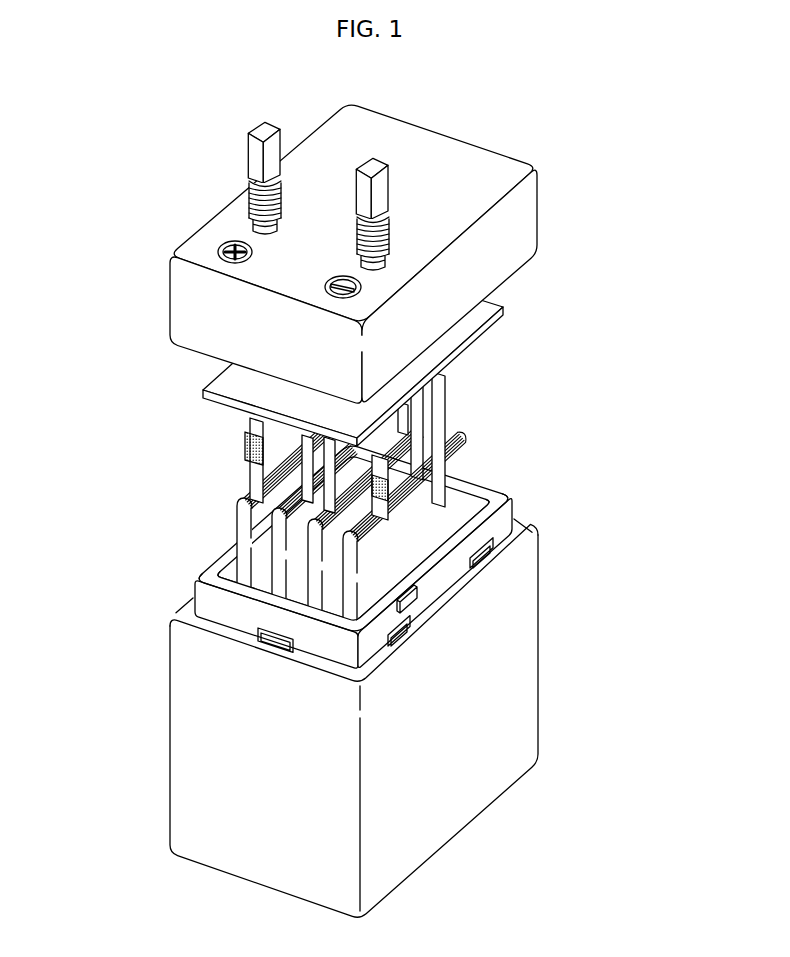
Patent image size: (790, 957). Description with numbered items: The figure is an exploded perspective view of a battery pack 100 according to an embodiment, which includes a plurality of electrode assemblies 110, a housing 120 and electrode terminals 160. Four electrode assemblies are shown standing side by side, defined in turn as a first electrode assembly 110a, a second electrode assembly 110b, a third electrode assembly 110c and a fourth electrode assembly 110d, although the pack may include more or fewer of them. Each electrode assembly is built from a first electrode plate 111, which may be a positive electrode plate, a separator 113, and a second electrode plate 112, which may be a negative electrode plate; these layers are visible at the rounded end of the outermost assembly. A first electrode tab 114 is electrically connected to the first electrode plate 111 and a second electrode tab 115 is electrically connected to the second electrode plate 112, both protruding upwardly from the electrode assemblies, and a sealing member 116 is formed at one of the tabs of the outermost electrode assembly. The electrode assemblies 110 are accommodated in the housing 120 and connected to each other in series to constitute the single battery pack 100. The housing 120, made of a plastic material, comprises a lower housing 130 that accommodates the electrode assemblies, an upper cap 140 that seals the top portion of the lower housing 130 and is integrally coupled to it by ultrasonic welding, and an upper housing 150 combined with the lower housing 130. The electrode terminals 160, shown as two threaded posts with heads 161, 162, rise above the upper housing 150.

The battery pack 100 is at (95, 83).
The electrode assemblies 110 is at (108, 572).
The first electrode assembly 110a is at (322, 521).
The second electrode assembly 110b is at (310, 563).
The third electrode assembly 110c is at (274, 542).
The fourth electrode assembly 110d is at (237, 528).
The first electrode plate 111 is at (474, 436).
The second electrode plate 112 is at (458, 434).
The separator 113 is at (467, 434).
The first electrode tab 114 is at (441, 444).
The second electrode tab 115 is at (383, 508).
The sealing member 116 is at (367, 523).
The housing 120 is at (628, 305).
The lower housing 130 is at (343, 644).
The upper cap 140 is at (493, 327).
The upper housing 150 is at (523, 240).
The electrode terminals 160 is at (156, 196).
The first terminal 161 is at (250, 140).
The second terminal 162 is at (363, 190).